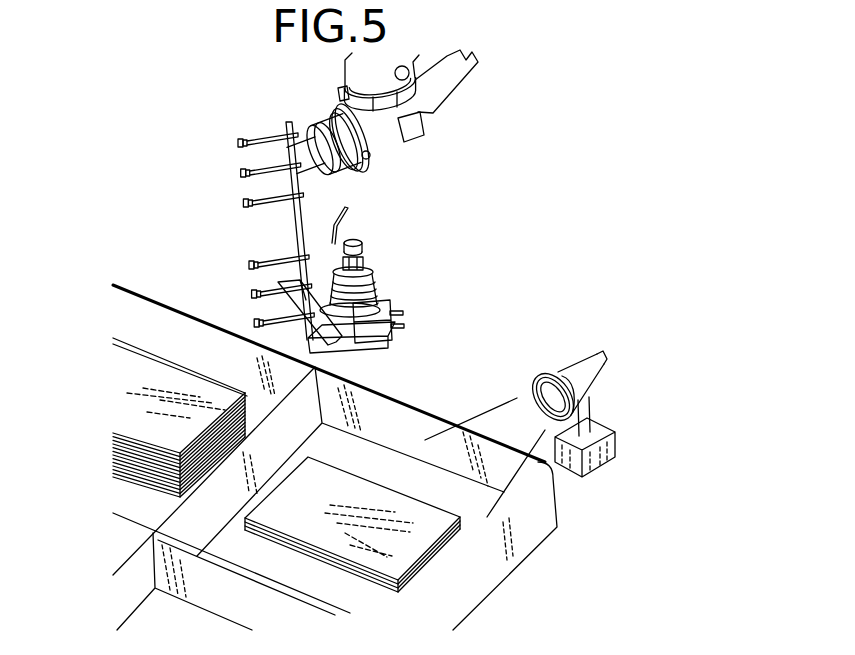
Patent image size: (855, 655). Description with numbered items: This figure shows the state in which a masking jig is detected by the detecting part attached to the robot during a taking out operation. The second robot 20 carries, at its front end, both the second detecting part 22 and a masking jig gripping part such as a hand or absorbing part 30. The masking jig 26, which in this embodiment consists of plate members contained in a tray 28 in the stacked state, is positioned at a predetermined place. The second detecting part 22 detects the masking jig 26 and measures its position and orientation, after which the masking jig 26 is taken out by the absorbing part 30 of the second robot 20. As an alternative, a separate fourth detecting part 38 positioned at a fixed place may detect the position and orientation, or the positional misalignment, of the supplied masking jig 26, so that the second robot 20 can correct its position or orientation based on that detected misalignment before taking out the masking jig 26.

The second robot 20 is at (440, 111).
The second detecting part 22 is at (430, 313).
The masking jig 26 is at (312, 574).
The tray 28 is at (533, 535).
The absorbing part 30 is at (254, 121).
The fourth detecting part 38 is at (622, 375).